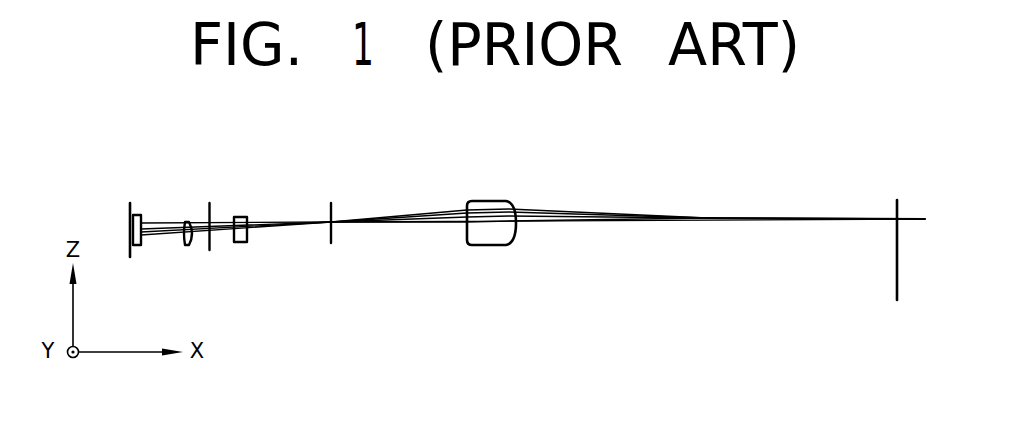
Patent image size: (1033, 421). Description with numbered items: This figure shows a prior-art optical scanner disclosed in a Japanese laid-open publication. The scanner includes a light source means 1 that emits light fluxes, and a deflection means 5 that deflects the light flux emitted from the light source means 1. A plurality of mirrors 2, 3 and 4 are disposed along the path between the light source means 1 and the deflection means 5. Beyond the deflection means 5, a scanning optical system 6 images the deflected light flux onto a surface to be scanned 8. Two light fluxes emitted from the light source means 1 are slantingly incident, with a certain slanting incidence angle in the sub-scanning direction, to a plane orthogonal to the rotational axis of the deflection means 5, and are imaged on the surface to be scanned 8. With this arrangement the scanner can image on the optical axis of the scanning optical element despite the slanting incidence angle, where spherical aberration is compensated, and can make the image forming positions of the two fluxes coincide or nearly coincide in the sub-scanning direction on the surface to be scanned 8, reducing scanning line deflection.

The light source means 1 is at (132, 205).
The mirror 2 is at (187, 220).
The mirror 3 is at (212, 207).
The mirror 4 is at (248, 216).
The deflection means 5 is at (331, 246).
The scanning optical system 6 is at (489, 247).
The surface to be scanned 8 is at (894, 287).